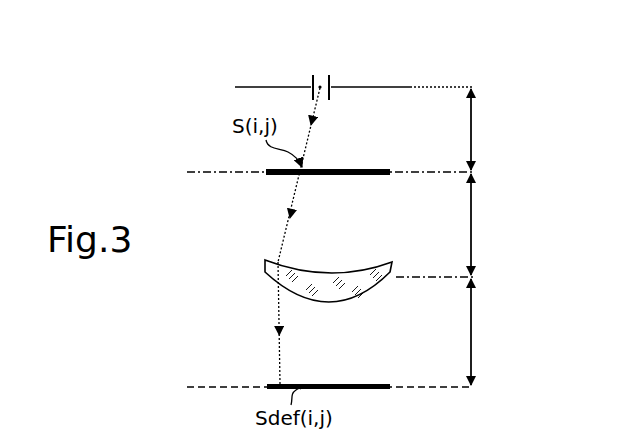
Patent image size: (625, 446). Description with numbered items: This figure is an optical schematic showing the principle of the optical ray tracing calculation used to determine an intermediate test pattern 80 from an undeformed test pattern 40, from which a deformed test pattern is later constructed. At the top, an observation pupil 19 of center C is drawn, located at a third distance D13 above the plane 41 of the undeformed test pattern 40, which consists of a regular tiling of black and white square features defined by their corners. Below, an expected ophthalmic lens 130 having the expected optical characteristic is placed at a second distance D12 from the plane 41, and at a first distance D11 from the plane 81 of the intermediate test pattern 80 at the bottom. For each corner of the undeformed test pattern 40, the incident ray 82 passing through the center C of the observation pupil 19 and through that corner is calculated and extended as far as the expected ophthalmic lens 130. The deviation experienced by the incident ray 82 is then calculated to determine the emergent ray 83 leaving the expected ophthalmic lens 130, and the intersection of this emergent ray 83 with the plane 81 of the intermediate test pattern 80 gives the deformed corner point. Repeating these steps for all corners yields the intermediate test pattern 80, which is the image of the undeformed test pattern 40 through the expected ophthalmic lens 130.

The observation pupil 19 is at (380, 86).
The undeformed test pattern 40 is at (372, 167).
The plane of the undeformed test pattern 41 is at (200, 171).
The incident ray 82 is at (285, 245).
The expected ophthalmic lens 130 is at (397, 264).
The emergent ray 83 is at (282, 352).
The intermediate test pattern 80 is at (358, 382).
The plane of the intermediate test pattern 81 is at (200, 385).
The third distance D13 is at (473, 125).
The second distance D12 is at (473, 225).
The first distance D11 is at (473, 335).